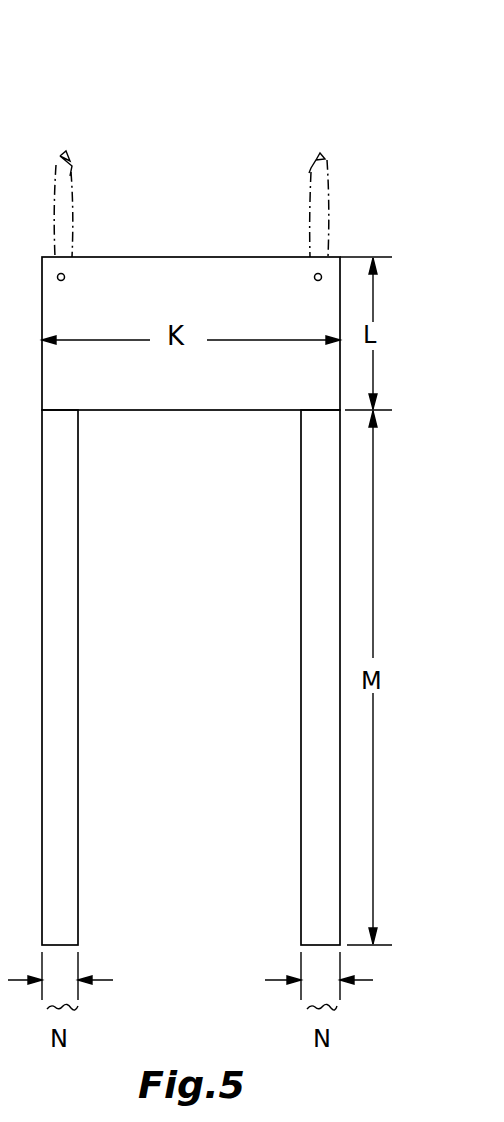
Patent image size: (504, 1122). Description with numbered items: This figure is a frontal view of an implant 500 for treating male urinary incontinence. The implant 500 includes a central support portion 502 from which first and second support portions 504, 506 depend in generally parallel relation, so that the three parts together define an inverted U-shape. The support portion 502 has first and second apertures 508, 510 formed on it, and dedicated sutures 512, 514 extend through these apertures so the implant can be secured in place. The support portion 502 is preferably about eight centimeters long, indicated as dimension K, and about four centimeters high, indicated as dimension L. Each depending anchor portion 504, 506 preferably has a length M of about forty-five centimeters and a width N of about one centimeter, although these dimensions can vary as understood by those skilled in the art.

The implant 500 is at (164, 98).
The support portion 502 is at (190, 402).
The first support portion 504 is at (72, 787).
The second support portion 506 is at (305, 643).
The first aperture 508 is at (64, 277).
The second aperture 510 is at (321, 276).
The suture 512 is at (78, 153).
The suture 514 is at (312, 170).